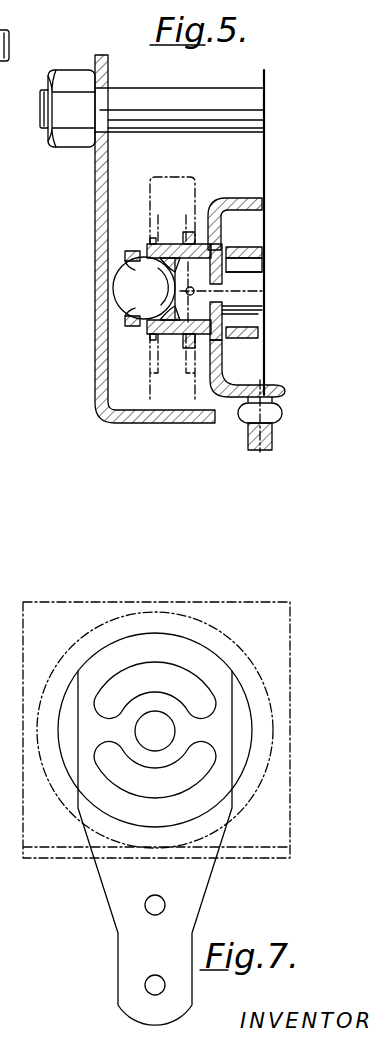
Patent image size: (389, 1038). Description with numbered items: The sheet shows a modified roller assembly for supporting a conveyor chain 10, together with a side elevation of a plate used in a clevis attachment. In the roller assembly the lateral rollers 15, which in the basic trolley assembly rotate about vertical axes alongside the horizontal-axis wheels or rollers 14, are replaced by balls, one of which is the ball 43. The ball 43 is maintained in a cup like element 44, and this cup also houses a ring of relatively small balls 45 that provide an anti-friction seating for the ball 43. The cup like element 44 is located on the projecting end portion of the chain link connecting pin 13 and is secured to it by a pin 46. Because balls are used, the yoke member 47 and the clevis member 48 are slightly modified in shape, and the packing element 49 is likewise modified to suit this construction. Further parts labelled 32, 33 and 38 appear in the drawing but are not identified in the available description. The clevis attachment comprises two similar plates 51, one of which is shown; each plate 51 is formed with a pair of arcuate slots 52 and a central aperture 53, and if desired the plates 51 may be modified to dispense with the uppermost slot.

In FIG. 5, the chain 10 is at (248, 243).
In FIG. 5, the chain link connecting pin 13 is at (248, 266).
In FIG. 5, the wheels or rollers 14 is at (151, 178).
In FIG. 5, the lateral rollers 15 is at (0, 265).
In FIG. 5, the washer 32 is at (0, 228).
In FIG. 5, the nut 33 is at (0, 127).
In FIG. 5, the lever end 38 is at (16, 100).
In FIG. 5, the ball 43 is at (118, 289).
In FIG. 5, the cup like element 44 is at (128, 324).
In FIG. 5, the small balls 45 is at (151, 248).
In FIG. 5, the pin 46 is at (200, 291).
In FIG. 5, the yoke member 47 is at (240, 197).
In FIG. 5, the clevis member 48 is at (225, 378).
In FIG. 5, the packing element 49 is at (184, 233).
In FIG. 7, the plates 51 is at (206, 832).
In FIG. 7, the arcuate slots 52 is at (207, 687).
In FIG. 7, the central aperture 53 is at (157, 712).